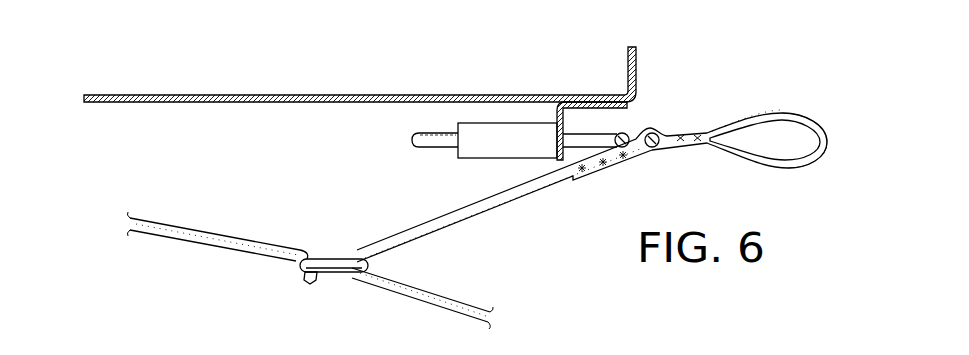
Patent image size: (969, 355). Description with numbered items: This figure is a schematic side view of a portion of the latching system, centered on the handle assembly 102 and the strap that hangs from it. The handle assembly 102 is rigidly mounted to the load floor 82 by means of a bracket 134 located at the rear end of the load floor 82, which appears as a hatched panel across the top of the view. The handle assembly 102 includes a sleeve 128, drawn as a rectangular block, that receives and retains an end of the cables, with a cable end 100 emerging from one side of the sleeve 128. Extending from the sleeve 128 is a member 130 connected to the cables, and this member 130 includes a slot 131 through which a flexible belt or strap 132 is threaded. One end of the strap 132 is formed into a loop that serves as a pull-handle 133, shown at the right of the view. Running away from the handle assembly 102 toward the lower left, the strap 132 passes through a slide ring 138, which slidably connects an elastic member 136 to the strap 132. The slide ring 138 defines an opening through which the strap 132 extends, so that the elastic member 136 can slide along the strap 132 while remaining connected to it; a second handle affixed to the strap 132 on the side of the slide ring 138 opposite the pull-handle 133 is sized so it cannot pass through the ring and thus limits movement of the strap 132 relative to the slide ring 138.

The load floor 82 is at (215, 96).
The rod 100 is at (424, 133).
The sleeve 128 is at (493, 135).
The bracket 134 is at (552, 122).
The member 130 is at (597, 140).
The slot 131 is at (628, 132).
The handle assembly 102 is at (680, 92).
The pull-handle 133 is at (797, 116).
The strap 132 is at (497, 207).
The elastic member 136 is at (217, 237).
The slide ring 138 is at (335, 257).